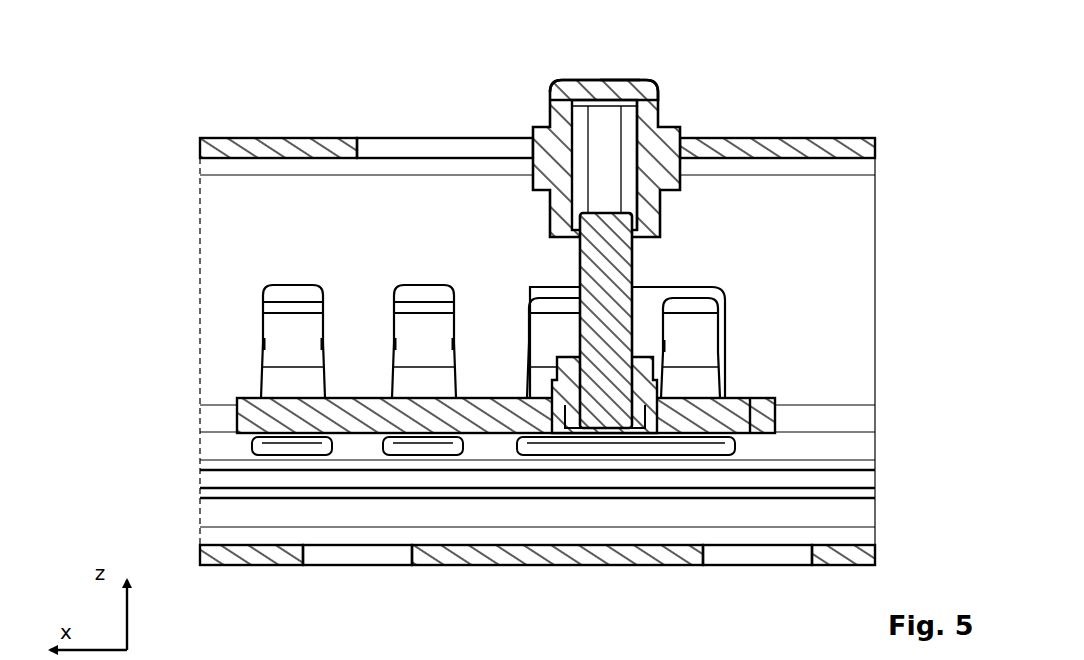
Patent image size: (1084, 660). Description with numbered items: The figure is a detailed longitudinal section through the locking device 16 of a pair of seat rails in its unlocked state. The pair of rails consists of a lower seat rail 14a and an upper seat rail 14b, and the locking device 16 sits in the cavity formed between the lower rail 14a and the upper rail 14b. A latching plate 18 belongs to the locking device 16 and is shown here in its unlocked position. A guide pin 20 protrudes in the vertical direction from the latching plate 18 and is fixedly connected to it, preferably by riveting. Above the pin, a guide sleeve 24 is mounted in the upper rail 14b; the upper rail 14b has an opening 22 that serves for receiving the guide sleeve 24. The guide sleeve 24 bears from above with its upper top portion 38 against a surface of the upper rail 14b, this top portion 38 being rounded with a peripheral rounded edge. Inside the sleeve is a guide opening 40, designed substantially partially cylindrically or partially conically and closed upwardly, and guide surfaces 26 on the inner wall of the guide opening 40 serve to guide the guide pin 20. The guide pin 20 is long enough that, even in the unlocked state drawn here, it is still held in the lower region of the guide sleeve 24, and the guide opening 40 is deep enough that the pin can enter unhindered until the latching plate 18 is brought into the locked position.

The lower seat rail 14a is at (452, 557).
The upper seat rail 14b is at (336, 150).
The locking device 16 is at (800, 223).
The latching plate 18 is at (255, 418).
The guide pin 20 is at (598, 306).
The opening 22 is at (686, 145).
The guide sleeve 24 is at (596, 88).
The guide surfaces 26 is at (618, 128).
The top portion 38 is at (618, 90).
The guide opening 40 is at (603, 160).